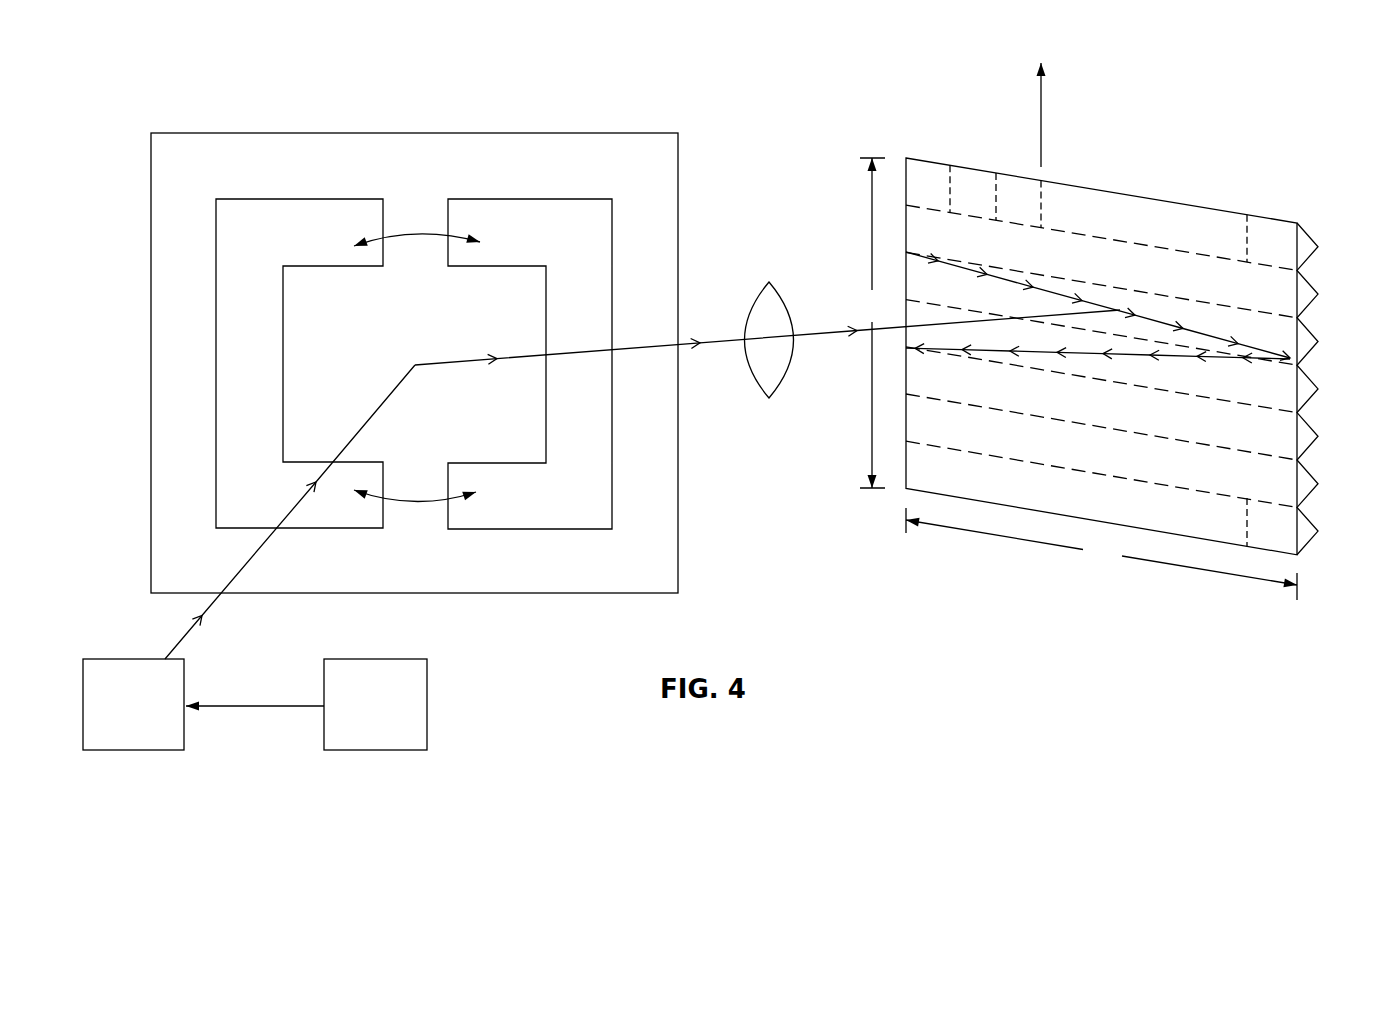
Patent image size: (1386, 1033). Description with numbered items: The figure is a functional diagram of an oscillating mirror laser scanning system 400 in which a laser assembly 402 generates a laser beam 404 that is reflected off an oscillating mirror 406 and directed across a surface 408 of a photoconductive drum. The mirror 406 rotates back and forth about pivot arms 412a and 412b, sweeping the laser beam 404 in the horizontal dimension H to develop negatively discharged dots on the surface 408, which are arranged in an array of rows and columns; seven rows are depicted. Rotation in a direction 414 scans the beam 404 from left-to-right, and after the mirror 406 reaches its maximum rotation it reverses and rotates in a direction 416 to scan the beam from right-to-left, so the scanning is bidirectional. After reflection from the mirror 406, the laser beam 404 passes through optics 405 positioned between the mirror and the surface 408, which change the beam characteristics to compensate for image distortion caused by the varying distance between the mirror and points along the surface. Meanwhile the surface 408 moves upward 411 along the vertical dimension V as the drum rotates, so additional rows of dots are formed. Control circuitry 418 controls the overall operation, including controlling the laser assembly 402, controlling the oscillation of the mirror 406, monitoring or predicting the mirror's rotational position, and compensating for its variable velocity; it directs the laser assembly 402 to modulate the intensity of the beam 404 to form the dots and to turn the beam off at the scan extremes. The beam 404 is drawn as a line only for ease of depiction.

The oscillating mirror laser scanning system 400 is at (709, 97).
The laser assembly 402 is at (186, 684).
The laser beam 404 is at (698, 352).
The optics 405 is at (762, 292).
The oscillating mirror 406 is at (546, 402).
The surface 408 is at (1143, 208).
The upward direction 411 is at (1042, 122).
The pivot arm 412a is at (452, 210).
The pivot arm 412b is at (450, 523).
The direction 414 is at (370, 235).
The direction 416 is at (468, 244).
The control circuitry 418 is at (429, 680).